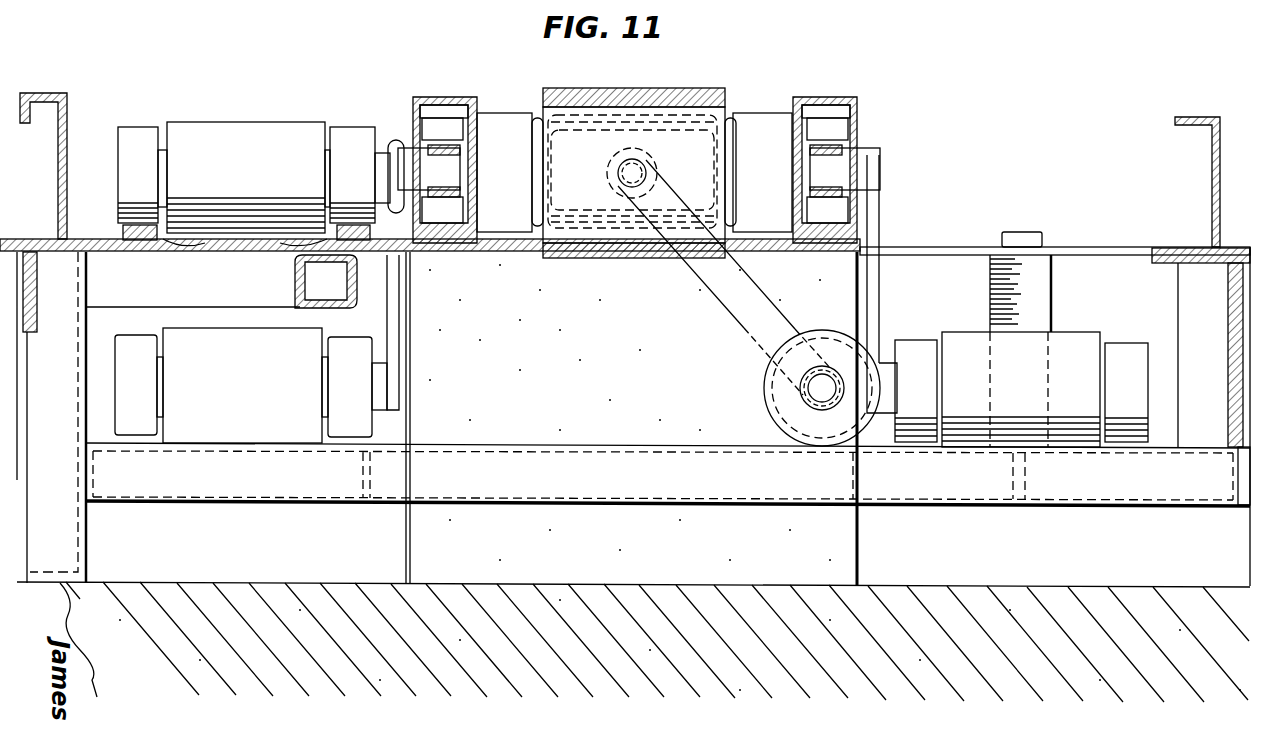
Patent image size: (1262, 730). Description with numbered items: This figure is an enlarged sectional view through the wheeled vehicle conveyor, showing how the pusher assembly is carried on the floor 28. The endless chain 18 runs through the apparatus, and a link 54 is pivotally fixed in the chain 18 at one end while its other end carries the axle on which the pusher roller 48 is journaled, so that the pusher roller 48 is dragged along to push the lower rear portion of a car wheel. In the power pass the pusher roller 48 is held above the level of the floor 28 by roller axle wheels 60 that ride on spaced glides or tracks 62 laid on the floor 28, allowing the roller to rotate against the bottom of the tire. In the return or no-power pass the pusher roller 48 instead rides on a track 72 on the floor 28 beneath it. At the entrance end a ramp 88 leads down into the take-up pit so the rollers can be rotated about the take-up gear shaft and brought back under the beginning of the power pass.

The chain 18 is at (458, 158).
The floor 28 is at (93, 239).
The pusher roller 48 is at (245, 132).
The link 54 is at (767, 335).
The roller axle wheels 60 is at (141, 127).
The glides or tracks 62 is at (272, 252).
The track 72 is at (1022, 240).
The ramp 88 is at (1037, 304).